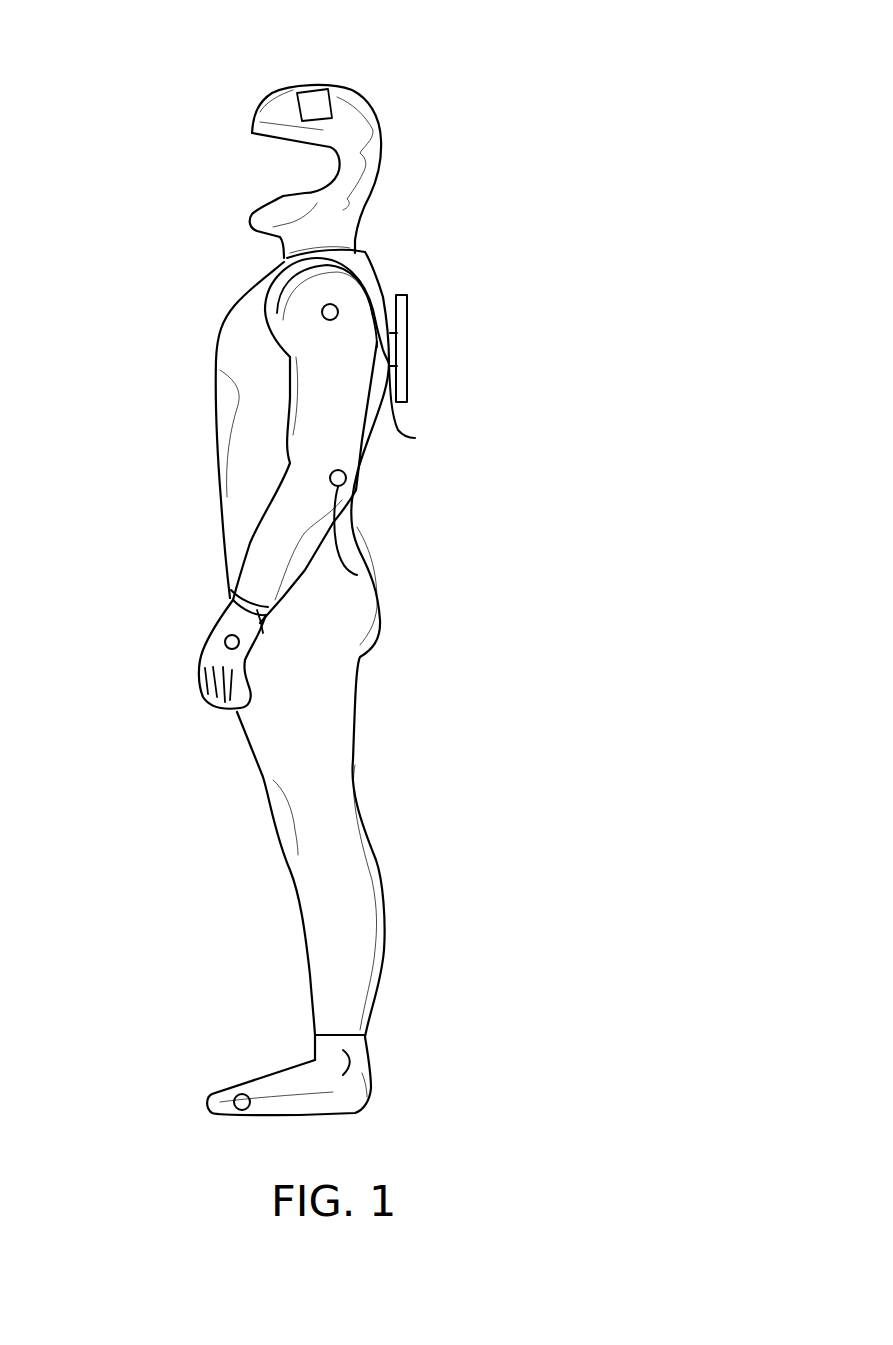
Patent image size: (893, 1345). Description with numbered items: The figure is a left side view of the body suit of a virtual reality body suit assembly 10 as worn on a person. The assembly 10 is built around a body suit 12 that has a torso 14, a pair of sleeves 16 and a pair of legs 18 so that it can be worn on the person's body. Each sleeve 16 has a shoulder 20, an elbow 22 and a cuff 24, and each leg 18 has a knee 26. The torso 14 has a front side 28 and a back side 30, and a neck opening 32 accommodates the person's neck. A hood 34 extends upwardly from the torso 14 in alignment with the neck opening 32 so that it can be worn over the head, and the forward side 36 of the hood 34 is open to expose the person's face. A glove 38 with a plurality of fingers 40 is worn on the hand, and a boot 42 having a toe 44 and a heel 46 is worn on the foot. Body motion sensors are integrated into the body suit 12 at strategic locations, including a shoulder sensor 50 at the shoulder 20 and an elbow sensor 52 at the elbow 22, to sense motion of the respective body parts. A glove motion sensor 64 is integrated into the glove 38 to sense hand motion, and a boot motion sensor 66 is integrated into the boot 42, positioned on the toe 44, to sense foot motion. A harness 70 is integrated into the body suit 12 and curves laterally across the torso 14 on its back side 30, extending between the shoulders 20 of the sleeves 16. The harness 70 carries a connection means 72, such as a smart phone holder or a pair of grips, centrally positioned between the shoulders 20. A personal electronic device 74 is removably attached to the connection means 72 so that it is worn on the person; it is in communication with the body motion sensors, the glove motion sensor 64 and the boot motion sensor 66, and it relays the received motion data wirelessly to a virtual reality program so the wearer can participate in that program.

The virtual reality body suit assembly 10 is at (460, 96).
The body suit 12 is at (192, 322).
The torso 14 is at (197, 397).
The sleeve 16 is at (354, 443).
The leg 18 is at (398, 893).
The shoulder 20 is at (330, 283).
The elbow 22 is at (346, 484).
The cuff 24 is at (258, 600).
The knee 26 is at (275, 822).
The front side 28 is at (215, 353).
The back side 30 is at (378, 345).
The neck opening 32 is at (283, 262).
The hood 34 is at (374, 111).
The forward side 36 is at (253, 117).
The glove 38 is at (210, 650).
The fingers 40 is at (227, 712).
The boot 42 is at (283, 1067).
The toe 44 is at (213, 1095).
The heel 46 is at (371, 1104).
The shoulder sensor 50 is at (372, 273).
The elbow sensor 52 is at (357, 575).
The glove motion sensor 64 is at (224, 641).
The boot motion sensor 66 is at (239, 1095).
The harness 70 is at (337, 308).
The connection means 72 is at (415, 438).
The personal electronic device 74 is at (408, 318).